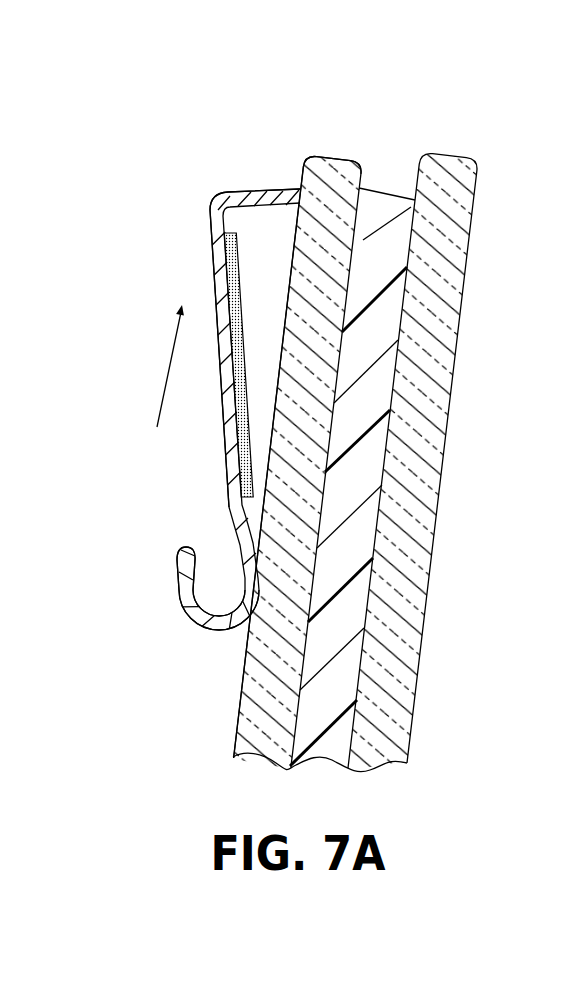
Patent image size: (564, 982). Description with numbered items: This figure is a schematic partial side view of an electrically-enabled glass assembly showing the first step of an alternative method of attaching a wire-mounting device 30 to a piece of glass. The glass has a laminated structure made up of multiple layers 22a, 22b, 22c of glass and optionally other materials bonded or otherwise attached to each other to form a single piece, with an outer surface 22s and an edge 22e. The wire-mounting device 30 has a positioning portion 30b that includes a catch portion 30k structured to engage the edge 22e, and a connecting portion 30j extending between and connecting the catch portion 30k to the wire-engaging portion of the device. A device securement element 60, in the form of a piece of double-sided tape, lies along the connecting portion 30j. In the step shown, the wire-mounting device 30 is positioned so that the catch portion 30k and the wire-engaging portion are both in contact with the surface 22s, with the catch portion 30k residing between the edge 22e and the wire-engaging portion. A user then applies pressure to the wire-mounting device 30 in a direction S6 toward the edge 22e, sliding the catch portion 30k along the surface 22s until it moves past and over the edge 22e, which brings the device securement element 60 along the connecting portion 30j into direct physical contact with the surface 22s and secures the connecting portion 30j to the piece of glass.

The layer of glass 22a is at (342, 173).
The layer of glass 22b is at (390, 207).
The layer of glass 22c is at (457, 205).
The edge of the piece of glass 22e is at (318, 162).
The outer surface of the piece of glass 22s is at (243, 687).
The wire-mounting device 30 is at (251, 182).
The positioning portion 30b is at (183, 632).
The connecting portion 30j is at (209, 230).
The catch portion 30k is at (238, 190).
The device securement element 60 is at (213, 281).
The direction S6 is at (173, 358).